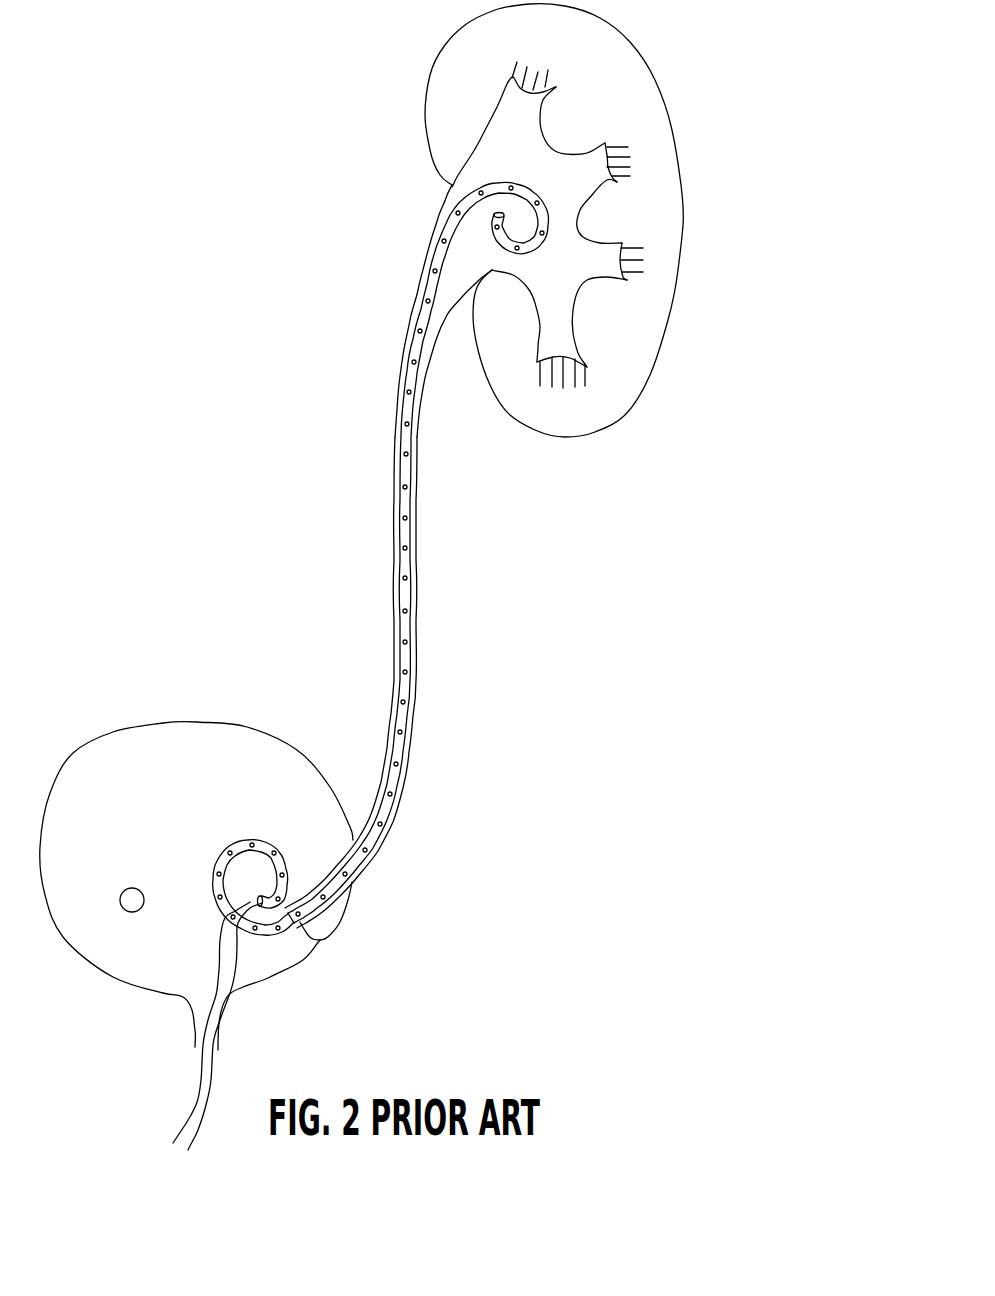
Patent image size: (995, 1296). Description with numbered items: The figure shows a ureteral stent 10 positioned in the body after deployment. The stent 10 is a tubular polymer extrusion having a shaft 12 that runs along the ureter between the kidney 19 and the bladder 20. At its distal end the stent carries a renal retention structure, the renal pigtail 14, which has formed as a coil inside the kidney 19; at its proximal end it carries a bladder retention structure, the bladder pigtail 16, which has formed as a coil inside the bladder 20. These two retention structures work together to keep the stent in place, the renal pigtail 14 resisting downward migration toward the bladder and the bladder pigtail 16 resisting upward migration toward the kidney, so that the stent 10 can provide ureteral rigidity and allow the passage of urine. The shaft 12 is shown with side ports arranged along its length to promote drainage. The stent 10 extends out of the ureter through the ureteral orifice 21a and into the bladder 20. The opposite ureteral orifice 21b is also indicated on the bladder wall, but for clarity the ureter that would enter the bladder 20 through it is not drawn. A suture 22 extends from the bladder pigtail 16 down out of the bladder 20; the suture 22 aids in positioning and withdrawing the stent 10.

The stent 10 is at (370, 520).
The shaft 12 is at (417, 682).
The renal pigtail 14 is at (538, 188).
The bladder pigtail 16 is at (205, 853).
The kidney 19 is at (641, 394).
The bladder 20 is at (120, 737).
The ureteral orifice 21a is at (302, 924).
The opposite ureteral orifice 21b is at (128, 897).
The suture 22 is at (231, 973).